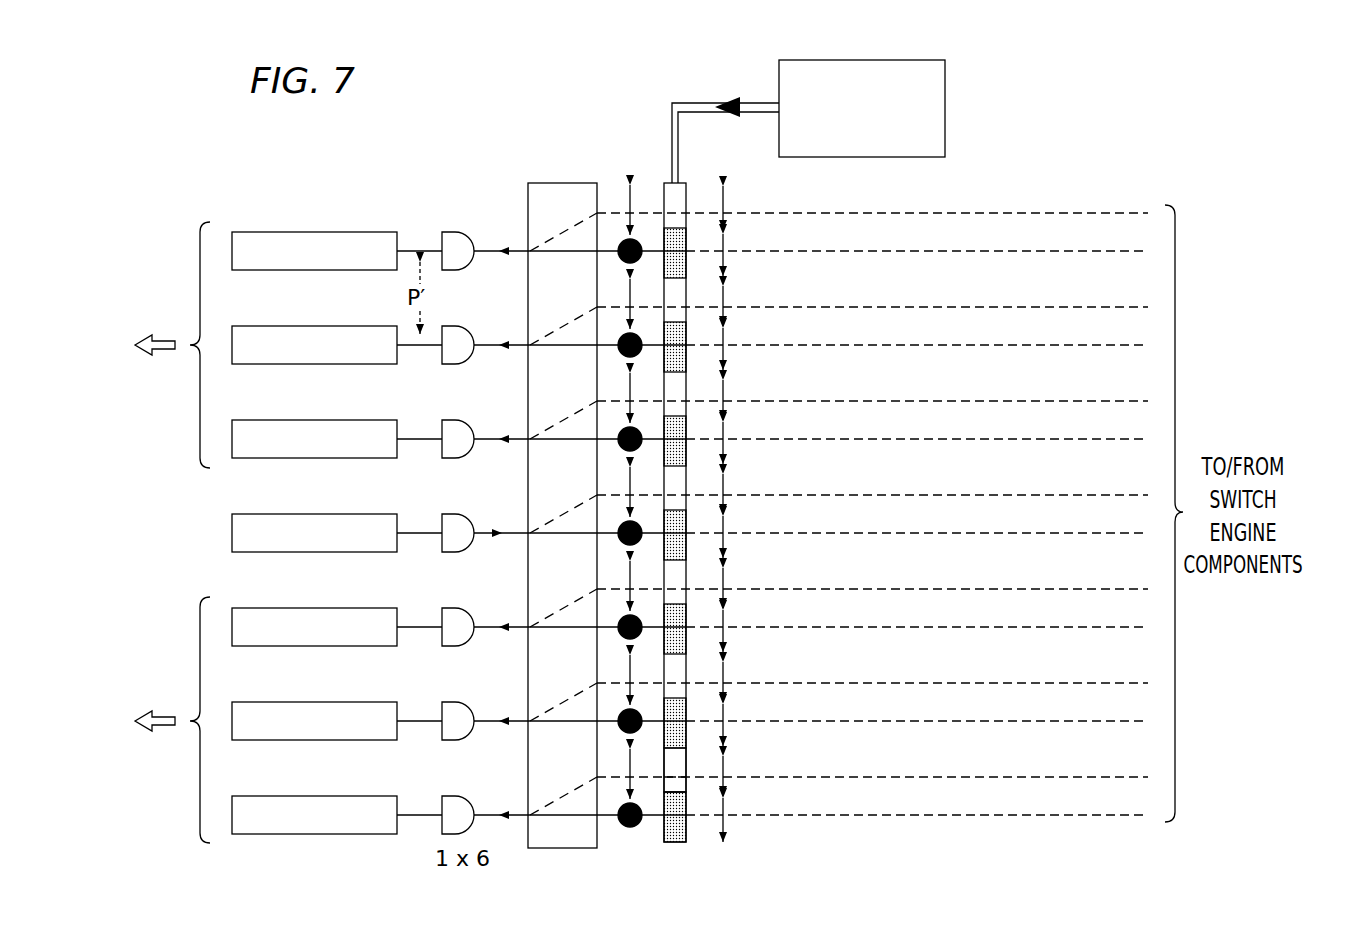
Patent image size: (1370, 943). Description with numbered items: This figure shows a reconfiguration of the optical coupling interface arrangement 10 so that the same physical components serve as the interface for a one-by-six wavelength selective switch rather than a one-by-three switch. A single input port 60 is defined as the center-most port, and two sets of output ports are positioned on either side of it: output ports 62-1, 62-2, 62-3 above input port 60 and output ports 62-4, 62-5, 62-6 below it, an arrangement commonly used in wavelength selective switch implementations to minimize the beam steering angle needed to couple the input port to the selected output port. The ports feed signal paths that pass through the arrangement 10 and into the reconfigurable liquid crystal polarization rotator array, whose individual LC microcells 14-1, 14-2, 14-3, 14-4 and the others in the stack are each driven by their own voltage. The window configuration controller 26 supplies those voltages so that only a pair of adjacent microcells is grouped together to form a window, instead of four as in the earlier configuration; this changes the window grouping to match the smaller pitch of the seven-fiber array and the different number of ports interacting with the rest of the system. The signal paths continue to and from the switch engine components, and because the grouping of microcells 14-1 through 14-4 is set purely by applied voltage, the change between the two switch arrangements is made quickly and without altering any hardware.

The optical coupling interface arrangement 10 is at (670, 545).
The LC microcell 14-1 is at (687, 836).
The LC microcell 14-2 is at (675, 805).
The LC microcell 14-3 is at (675, 783).
The LC microcell 14-4 is at (675, 758).
The window configuration controller 26 is at (945, 70).
The input port 60 is at (232, 530).
The output port 62-1 is at (318, 232).
The output port 62-2 is at (318, 326).
The output port 62-3 is at (318, 420).
The output port 62-4 is at (318, 608).
The output port 62-5 is at (318, 702).
The output port 62-6 is at (318, 796).